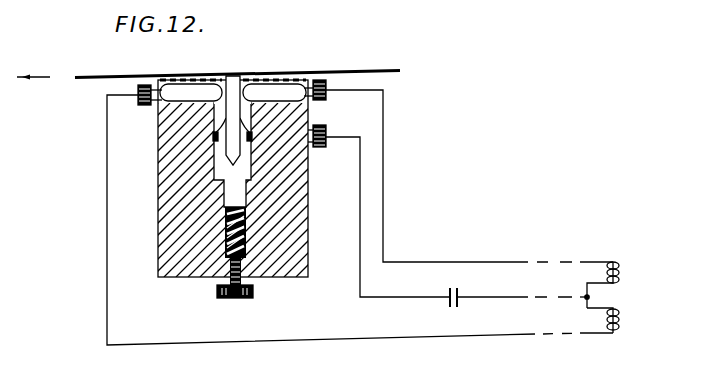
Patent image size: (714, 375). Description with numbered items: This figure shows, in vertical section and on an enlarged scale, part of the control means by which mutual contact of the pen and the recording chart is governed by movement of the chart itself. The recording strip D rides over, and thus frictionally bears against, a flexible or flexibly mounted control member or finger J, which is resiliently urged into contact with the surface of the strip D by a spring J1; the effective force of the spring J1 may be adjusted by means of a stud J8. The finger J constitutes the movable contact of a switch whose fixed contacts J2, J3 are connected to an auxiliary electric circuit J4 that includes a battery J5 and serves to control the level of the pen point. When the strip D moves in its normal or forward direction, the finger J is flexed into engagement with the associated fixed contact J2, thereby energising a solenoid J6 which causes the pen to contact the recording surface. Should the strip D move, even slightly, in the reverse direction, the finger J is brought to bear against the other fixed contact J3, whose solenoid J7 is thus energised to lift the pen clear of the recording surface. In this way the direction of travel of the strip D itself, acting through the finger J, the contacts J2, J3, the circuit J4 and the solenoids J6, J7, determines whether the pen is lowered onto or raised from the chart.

The recording strip D is at (124, 75).
The control finger J is at (241, 75).
The spring J1 is at (220, 272).
The fixed contact J2 is at (186, 98).
The fixed contact J3 is at (274, 90).
The auxiliary electric circuit J4 is at (483, 261).
The battery J5 is at (460, 291).
The solenoid J6 is at (622, 308).
The solenoid J7 is at (620, 263).
The stud J8 is at (229, 296).